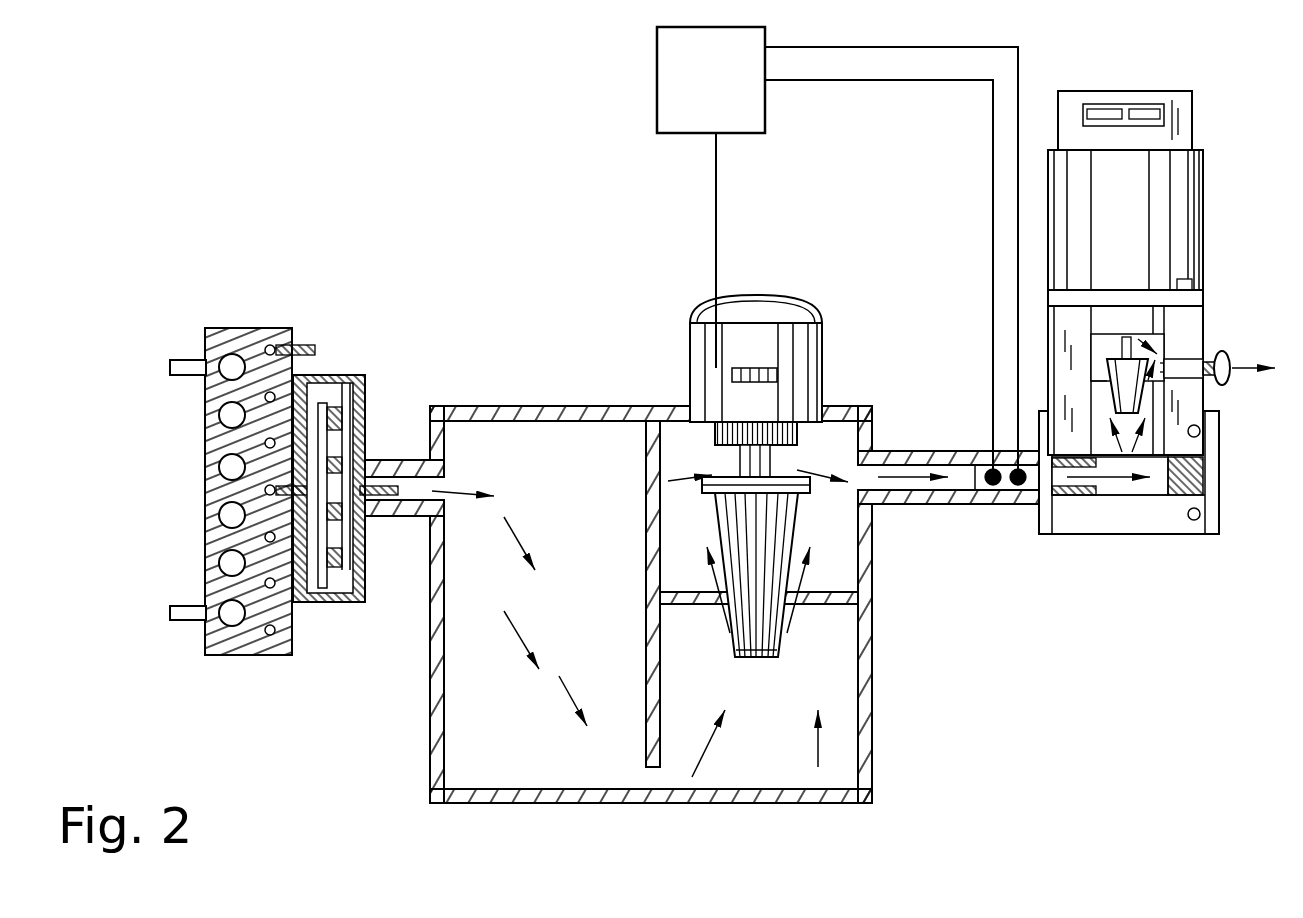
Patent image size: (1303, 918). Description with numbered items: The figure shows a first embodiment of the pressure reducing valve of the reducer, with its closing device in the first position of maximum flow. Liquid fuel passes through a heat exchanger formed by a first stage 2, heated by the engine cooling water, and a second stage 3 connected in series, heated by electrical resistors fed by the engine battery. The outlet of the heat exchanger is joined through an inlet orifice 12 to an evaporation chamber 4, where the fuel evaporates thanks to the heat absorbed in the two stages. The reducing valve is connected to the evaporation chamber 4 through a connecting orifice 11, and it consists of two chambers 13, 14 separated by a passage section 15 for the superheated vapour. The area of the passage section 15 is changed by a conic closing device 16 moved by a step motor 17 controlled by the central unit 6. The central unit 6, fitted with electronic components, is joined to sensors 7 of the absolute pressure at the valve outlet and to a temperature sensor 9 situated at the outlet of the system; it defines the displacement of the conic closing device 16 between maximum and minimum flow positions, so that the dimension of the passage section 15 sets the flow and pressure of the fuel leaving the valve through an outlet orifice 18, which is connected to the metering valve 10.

The first stage of the heat exchanger 2 is at (232, 333).
The second stage of the heat exchanger 3 is at (322, 388).
The evaporation chamber 4 is at (521, 472).
The central unit 6 is at (837, 248).
The sensors of the absolute pressure 7 is at (993, 495).
The temperature sensor 9 is at (1018, 495).
The metering valve 10 is at (1145, 540).
The connecting orifice 11 is at (652, 780).
The inlet orifice 12 is at (420, 472).
The chamber 13 is at (758, 707).
The chamber 14 is at (832, 440).
The passage section 15 is at (800, 607).
The conic closing device 16 is at (745, 510).
The step motor 17 is at (783, 335).
The outlet orifice 18 is at (940, 475).